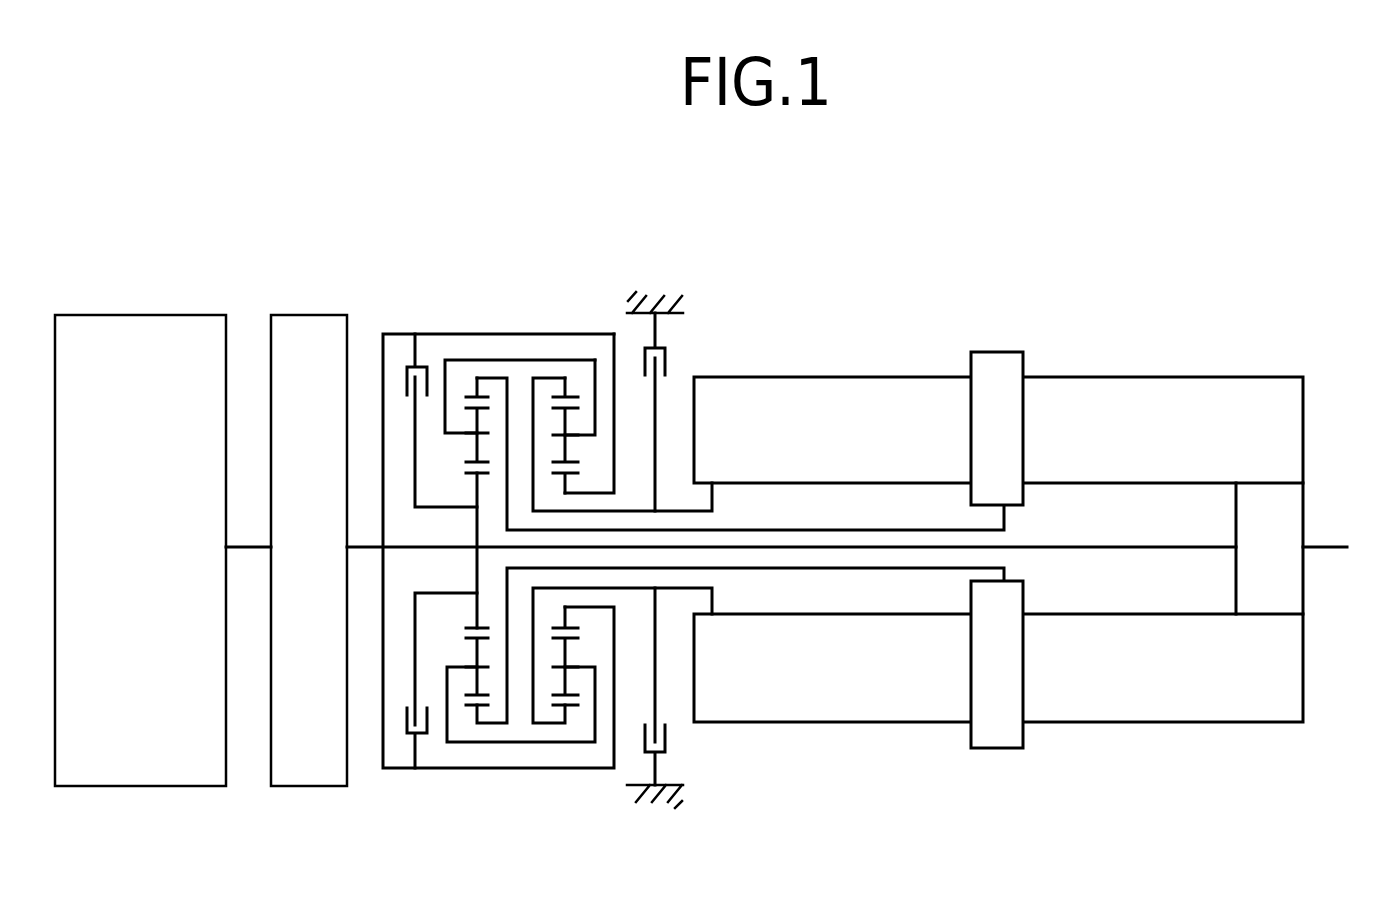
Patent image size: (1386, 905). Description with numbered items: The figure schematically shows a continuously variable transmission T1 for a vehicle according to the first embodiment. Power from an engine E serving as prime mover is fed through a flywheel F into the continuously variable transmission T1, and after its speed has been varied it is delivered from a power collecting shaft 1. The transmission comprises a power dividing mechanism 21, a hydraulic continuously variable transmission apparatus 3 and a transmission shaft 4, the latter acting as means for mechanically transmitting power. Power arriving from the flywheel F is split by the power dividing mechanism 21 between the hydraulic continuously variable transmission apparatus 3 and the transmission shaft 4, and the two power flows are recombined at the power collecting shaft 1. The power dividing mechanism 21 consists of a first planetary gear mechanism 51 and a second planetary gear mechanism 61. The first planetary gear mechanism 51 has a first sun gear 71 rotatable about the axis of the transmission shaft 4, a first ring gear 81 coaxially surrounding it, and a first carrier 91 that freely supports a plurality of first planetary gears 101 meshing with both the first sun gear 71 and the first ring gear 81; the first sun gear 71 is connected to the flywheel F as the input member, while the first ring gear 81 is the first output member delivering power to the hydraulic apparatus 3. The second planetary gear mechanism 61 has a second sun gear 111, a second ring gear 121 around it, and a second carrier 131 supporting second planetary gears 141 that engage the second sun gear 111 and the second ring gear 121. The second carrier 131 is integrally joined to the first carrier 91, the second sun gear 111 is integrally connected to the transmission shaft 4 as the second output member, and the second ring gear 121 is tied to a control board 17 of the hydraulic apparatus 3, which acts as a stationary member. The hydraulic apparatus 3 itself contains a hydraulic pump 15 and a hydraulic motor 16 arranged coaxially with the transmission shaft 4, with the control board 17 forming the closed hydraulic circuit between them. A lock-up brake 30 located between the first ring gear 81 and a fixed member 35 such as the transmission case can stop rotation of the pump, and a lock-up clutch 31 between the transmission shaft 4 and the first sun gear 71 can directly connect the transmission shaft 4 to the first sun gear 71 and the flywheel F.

The power collecting shaft 1 is at (1322, 547).
The hydraulic continuously variable transmission apparatus 3 is at (1097, 248).
The transmission shaft 4 is at (1087, 543).
The hydraulic pump 15 is at (900, 368).
The hydraulic motor 16 is at (1126, 368).
The control board 17 is at (998, 362).
The power dividing mechanism 21 is at (562, 250).
The second planetary gear mechanism 61 is at (470, 352).
The first planetary gear mechanism 51 is at (553, 352).
The first ring gear 81 is at (556, 377).
The first carrier 91 is at (595, 418).
The first sun gear 71 is at (597, 492).
The second sun gear 111 is at (476, 527).
The second carrier 131 is at (445, 421).
The second planetary gears 141 is at (473, 650).
The second ring gear 121 is at (490, 723).
The first planetary gears 101 is at (562, 678).
The lock-up brake 30 is at (667, 358).
The lock-up clutch 31 is at (406, 716).
The fixed member 35 is at (667, 300).
The continuously variable transmission T1 is at (701, 764).
The engine E is at (149, 568).
The flywheel F is at (298, 563).